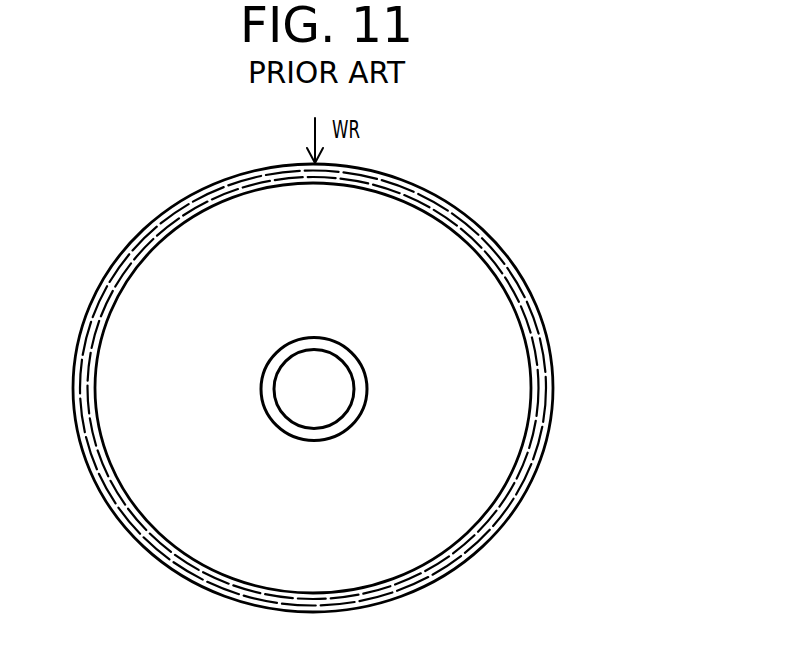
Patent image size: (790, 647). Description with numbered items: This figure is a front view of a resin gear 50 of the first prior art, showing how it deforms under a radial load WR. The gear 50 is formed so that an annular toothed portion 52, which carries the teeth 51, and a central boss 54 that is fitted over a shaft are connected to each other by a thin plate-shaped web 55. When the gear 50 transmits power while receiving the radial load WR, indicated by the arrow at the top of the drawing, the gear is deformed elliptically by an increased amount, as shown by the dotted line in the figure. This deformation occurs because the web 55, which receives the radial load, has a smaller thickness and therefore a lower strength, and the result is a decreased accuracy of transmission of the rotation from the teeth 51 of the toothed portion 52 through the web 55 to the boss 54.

The gear 50 is at (360, 381).
The teeth 51 is at (532, 280).
The toothed portion 52 is at (558, 378).
The boss 54 is at (364, 402).
The web 55 is at (458, 458).